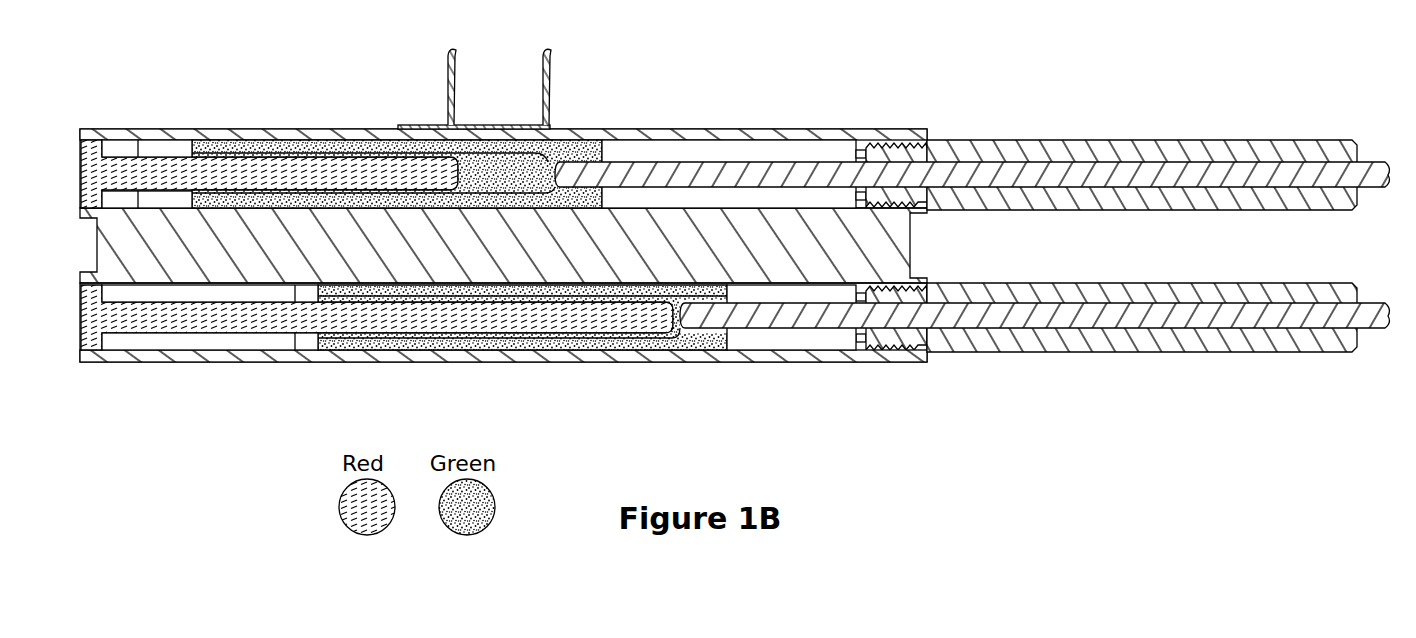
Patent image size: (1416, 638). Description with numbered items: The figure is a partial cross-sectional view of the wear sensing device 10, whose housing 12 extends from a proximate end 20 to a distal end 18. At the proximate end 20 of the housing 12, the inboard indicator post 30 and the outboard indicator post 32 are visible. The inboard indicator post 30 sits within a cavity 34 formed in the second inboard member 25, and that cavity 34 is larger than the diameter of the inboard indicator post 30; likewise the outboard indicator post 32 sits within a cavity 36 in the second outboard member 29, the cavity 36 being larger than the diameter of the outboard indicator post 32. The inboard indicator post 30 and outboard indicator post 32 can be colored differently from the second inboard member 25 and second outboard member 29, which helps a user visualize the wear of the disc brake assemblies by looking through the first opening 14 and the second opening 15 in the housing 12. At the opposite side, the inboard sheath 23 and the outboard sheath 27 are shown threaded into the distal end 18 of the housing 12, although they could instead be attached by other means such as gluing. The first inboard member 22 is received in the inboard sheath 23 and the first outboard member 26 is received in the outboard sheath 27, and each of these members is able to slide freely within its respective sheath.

The wear sensing device 10 is at (682, 104).
The housing 12 is at (792, 362).
The first opening 14 is at (168, 152).
The second opening 15 is at (306, 342).
The distal end 18 is at (886, 380).
The proximate end 20 is at (296, 122).
The first inboard member 22 is at (1058, 172).
The inboard sheath 23 is at (990, 140).
The second inboard member 25 is at (564, 150).
The first outboard member 26 is at (1135, 320).
The outboard sheath 27 is at (1063, 340).
The second outboard member 29 is at (592, 342).
The inboard indicator post 30 is at (124, 175).
The outboard indicator post 32 is at (146, 312).
The cavity 34 is at (482, 145).
The cavity 36 is at (522, 318).